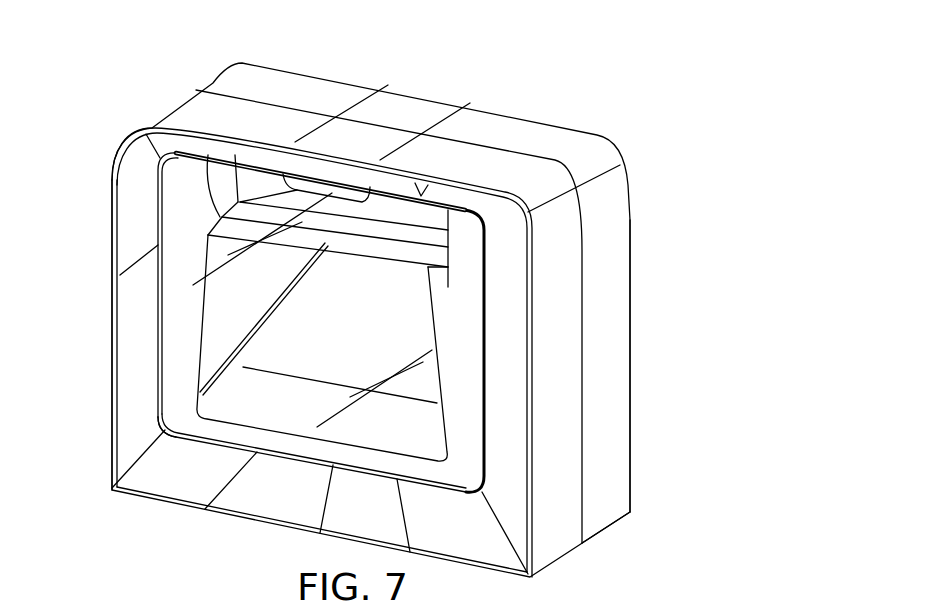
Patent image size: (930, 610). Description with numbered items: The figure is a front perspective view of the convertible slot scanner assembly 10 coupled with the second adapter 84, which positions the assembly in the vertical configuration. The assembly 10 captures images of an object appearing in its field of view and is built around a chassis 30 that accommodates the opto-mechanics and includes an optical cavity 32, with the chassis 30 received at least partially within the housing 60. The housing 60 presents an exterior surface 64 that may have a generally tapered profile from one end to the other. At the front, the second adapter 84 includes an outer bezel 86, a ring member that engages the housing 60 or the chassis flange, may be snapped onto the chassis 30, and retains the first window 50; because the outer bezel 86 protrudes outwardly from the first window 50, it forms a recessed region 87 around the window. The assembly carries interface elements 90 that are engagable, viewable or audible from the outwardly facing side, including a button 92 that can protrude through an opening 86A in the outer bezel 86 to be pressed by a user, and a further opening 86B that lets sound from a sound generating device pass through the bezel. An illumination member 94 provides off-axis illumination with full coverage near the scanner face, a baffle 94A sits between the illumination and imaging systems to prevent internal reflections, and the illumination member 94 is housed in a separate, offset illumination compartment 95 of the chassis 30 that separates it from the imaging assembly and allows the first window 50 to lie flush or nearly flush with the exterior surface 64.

The convertible slot scanner assembly 10 is at (670, 512).
The chassis 30 is at (470, 407).
The optical cavity 32 is at (405, 313).
The first window 50 is at (380, 427).
The housing 60 is at (598, 400).
The exterior surface 64 is at (443, 130).
The second adapter 84 is at (120, 210).
The outer bezel 86 is at (120, 287).
The opening 86A is at (450, 202).
The opening 86B is at (104, 325).
The recessed region 87 is at (146, 423).
The interface element 90 is at (212, 150).
The button 92 is at (442, 190).
The illumination member 94 is at (338, 195).
The baffle 94A is at (395, 212).
The illumination compartment 95 is at (263, 178).